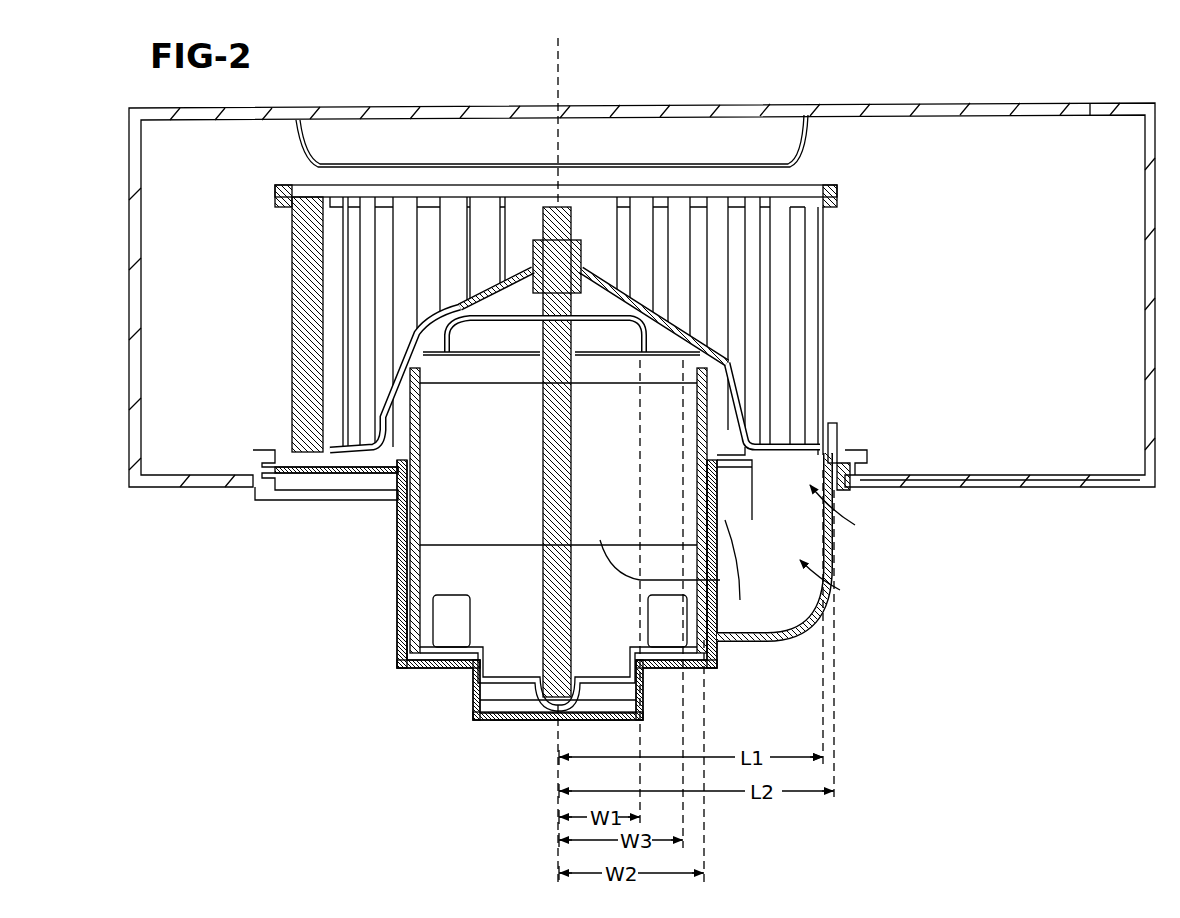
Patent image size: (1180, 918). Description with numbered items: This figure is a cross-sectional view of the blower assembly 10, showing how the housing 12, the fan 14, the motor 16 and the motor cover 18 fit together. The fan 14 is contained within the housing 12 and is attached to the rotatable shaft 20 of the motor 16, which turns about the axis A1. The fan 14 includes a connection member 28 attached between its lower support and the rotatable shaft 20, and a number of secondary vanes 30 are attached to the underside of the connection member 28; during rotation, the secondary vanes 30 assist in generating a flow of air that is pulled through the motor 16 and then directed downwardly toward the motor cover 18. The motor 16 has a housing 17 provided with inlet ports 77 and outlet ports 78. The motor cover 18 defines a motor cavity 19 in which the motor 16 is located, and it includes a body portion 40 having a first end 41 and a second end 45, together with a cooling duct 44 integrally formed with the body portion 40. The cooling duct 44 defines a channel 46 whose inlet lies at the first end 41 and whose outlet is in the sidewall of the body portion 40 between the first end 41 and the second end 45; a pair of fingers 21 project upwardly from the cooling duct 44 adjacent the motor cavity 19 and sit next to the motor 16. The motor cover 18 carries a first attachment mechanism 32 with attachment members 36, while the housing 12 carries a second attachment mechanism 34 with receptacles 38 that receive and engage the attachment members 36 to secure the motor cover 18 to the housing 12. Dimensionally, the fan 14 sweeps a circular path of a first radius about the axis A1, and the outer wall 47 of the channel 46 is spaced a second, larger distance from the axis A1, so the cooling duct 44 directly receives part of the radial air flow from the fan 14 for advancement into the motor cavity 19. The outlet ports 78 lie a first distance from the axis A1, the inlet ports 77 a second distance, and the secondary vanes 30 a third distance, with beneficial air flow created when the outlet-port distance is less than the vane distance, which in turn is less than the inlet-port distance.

The blower assembly 10 is at (890, 78).
The housing 12 is at (1060, 103).
The fan 14 is at (290, 243).
The motor 16 is at (505, 700).
The housing 17 is at (440, 372).
The motor cover 18 is at (508, 590).
The motor cavity 19 is at (422, 620).
The rotatable shaft 20 is at (545, 578).
The fingers 21 is at (720, 432).
The connection member 28 is at (537, 278).
The secondary vanes 30 is at (468, 300).
The first attachment mechanism 32 is at (838, 508).
The second attachment mechanism 34 is at (895, 440).
The attachment members 36 is at (852, 490).
The receptacles 38 is at (860, 455).
The body portion 40 is at (398, 597).
The first end 41 is at (392, 482).
The cooling duct 44 is at (805, 572).
The second end 45 is at (540, 748).
The channel 46 is at (742, 545).
The outer wall 47 is at (842, 425).
The inlet ports 77 is at (600, 540).
The outlet ports 78 is at (482, 360).
The axis A1 is at (560, 70).